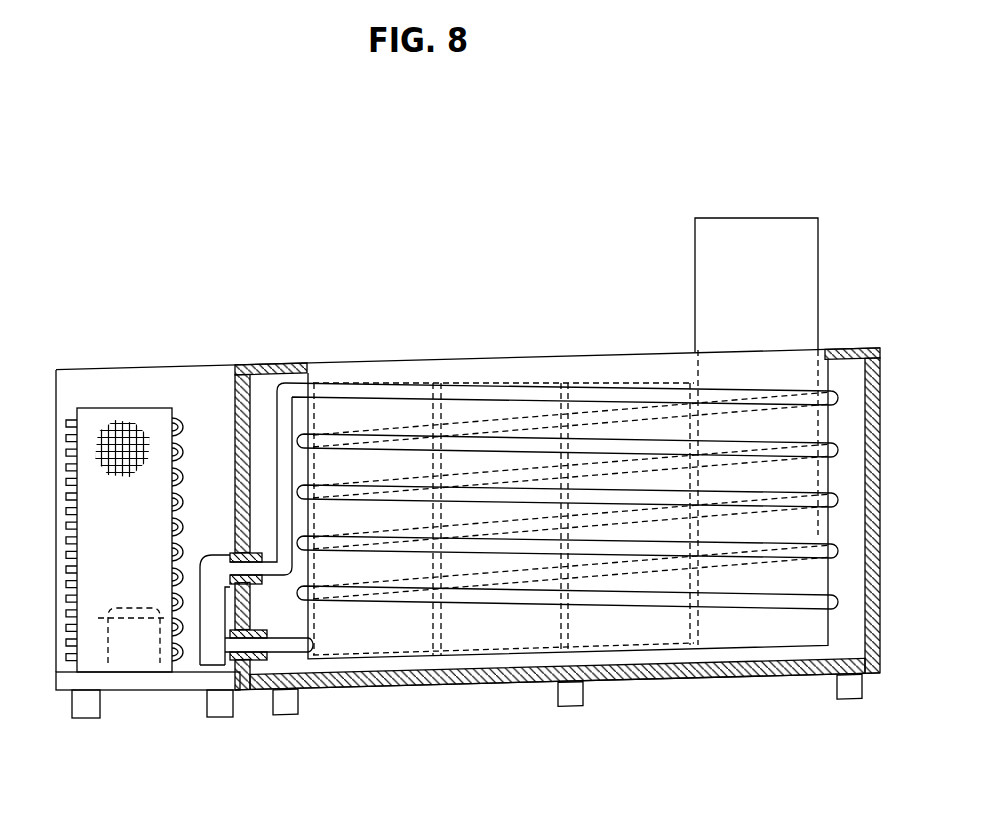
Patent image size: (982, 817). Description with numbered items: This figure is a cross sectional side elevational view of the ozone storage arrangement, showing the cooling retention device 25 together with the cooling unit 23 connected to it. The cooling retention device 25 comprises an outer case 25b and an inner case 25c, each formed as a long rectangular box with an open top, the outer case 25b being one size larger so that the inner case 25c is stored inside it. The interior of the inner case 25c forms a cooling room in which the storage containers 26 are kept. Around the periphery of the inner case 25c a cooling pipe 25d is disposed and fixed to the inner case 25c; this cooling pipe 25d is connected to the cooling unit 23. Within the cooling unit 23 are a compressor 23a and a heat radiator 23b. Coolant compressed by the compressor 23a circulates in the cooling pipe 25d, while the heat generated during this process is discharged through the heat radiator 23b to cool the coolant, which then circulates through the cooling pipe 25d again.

The cooling unit 23 is at (170, 341).
The compressor 23a is at (167, 652).
The heat radiator 23b is at (127, 427).
The cooling retention device 25 is at (391, 334).
The outer case 25b is at (641, 673).
The inner case 25c is at (770, 638).
The cooling pipe 25d is at (378, 595).
The storage container 26 is at (742, 238).